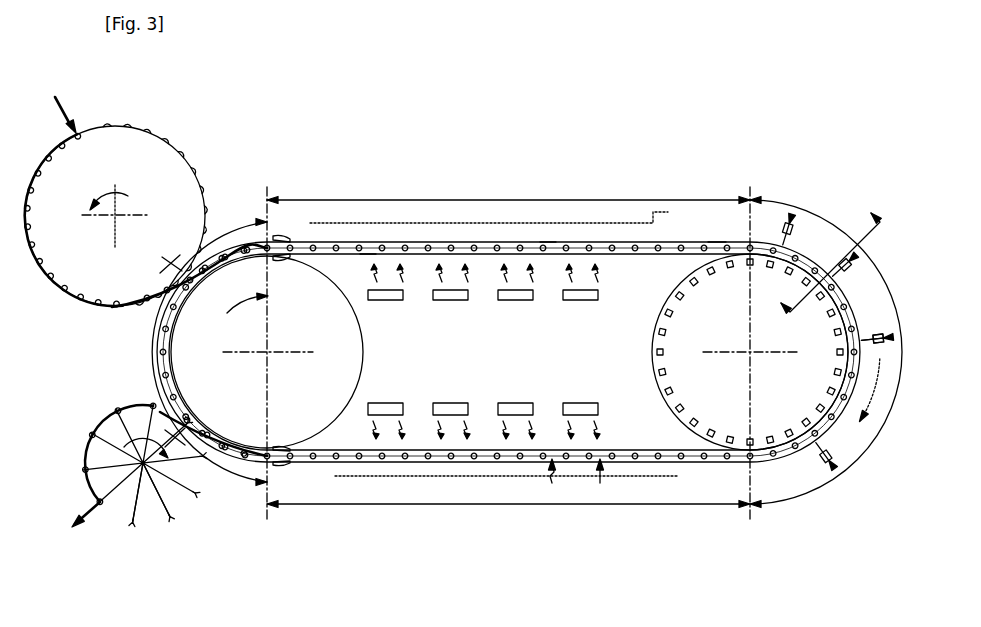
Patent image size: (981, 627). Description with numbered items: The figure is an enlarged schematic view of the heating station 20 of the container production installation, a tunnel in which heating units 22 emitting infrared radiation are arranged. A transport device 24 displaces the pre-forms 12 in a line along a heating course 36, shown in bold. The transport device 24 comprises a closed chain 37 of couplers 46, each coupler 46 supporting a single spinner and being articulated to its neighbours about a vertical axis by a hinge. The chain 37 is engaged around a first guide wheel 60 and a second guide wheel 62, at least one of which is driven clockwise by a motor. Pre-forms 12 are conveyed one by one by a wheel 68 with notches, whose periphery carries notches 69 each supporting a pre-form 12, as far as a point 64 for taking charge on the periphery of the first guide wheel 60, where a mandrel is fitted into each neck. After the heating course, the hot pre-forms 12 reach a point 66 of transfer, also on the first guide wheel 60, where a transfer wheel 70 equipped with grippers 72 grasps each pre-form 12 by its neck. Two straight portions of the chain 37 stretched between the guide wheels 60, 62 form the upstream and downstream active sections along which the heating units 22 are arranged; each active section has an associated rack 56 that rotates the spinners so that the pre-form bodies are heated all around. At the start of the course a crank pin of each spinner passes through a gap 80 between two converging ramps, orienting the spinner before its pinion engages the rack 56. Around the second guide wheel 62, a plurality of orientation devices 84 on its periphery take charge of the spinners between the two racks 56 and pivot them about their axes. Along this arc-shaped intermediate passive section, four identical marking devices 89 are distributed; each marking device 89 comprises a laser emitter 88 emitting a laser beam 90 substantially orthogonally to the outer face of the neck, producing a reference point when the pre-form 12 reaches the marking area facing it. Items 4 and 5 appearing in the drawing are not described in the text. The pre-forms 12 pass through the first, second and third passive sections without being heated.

The section arrows 4 is at (576, 480).
The section line 5 is at (837, 256).
The pre-form 12 is at (47, 281).
The heating station 20 is at (393, 483).
The heating unit 22 is at (452, 403).
The transport device 24 is at (464, 244).
The heating course 36 is at (367, 250).
The chain 37 is at (547, 242).
The coupler 46 is at (717, 242).
The rack 56 is at (645, 528).
The first guide wheel 60 is at (323, 362).
The second guide wheel 62 is at (775, 432).
The point for taking charge 64 is at (186, 280).
The point of transfer 66 is at (170, 417).
The wheel with notches 68 is at (153, 158).
The notch 69 is at (137, 123).
The transfer wheel 70 is at (148, 508).
The gripper 72 is at (163, 511).
The gap between converging ramps 80 is at (281, 238).
The orientation device 84 is at (713, 268).
The laser emitter 88 is at (878, 333).
The marking device 89 is at (792, 212).
The laser beam 90 is at (868, 340).